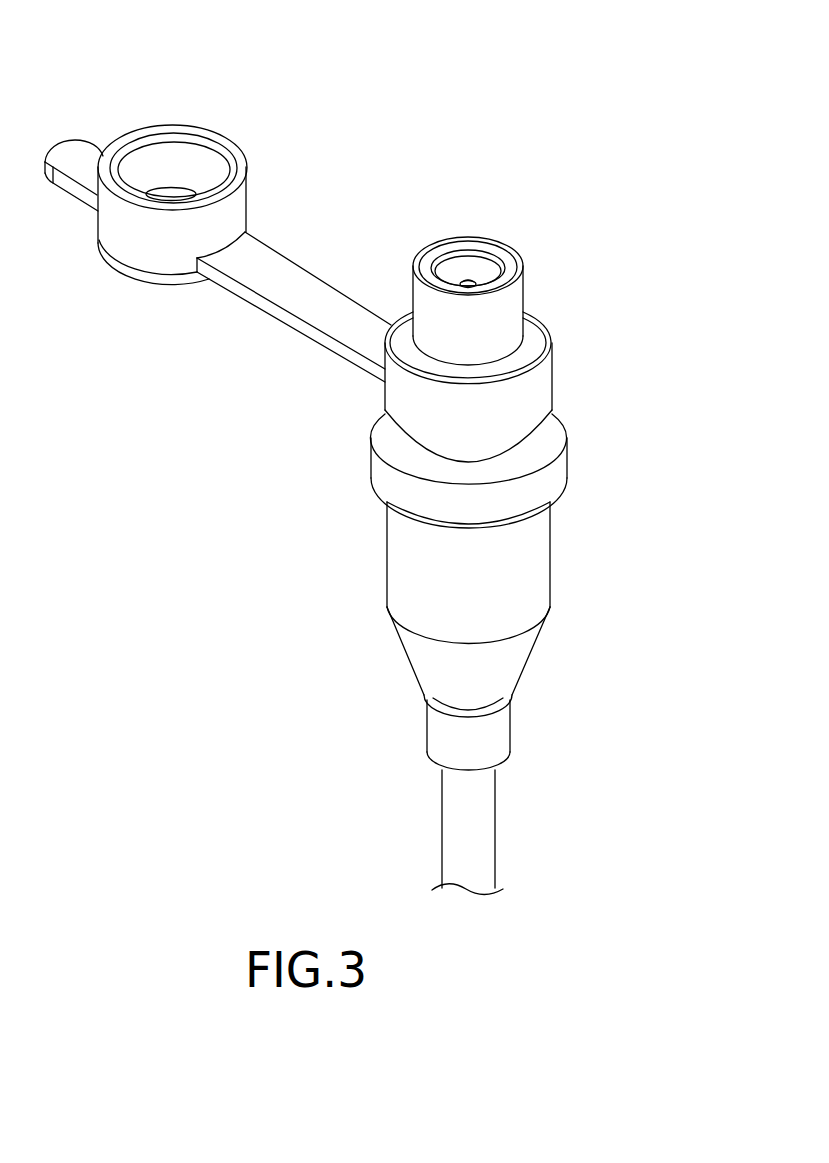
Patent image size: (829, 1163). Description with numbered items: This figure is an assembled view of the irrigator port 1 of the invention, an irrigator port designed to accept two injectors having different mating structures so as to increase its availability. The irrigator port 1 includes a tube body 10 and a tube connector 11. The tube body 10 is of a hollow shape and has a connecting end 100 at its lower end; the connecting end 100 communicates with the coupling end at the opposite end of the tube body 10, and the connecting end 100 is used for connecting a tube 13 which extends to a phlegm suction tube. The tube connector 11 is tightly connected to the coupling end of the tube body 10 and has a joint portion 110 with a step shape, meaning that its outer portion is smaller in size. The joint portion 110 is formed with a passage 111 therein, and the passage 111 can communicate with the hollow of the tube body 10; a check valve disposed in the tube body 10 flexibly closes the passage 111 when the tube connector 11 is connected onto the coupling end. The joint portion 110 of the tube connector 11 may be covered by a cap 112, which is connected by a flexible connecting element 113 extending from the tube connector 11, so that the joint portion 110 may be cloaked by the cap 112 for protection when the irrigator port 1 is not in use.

The irrigator port 1 is at (312, 30).
The tube body 10 is at (542, 566).
The tube connector 11 is at (542, 390).
The tube 13 is at (487, 828).
The connecting end 100 is at (438, 732).
The joint portion 110 is at (533, 271).
The passage 111 is at (473, 270).
The cap 112 is at (125, 238).
The flexible connecting element 113 is at (303, 308).